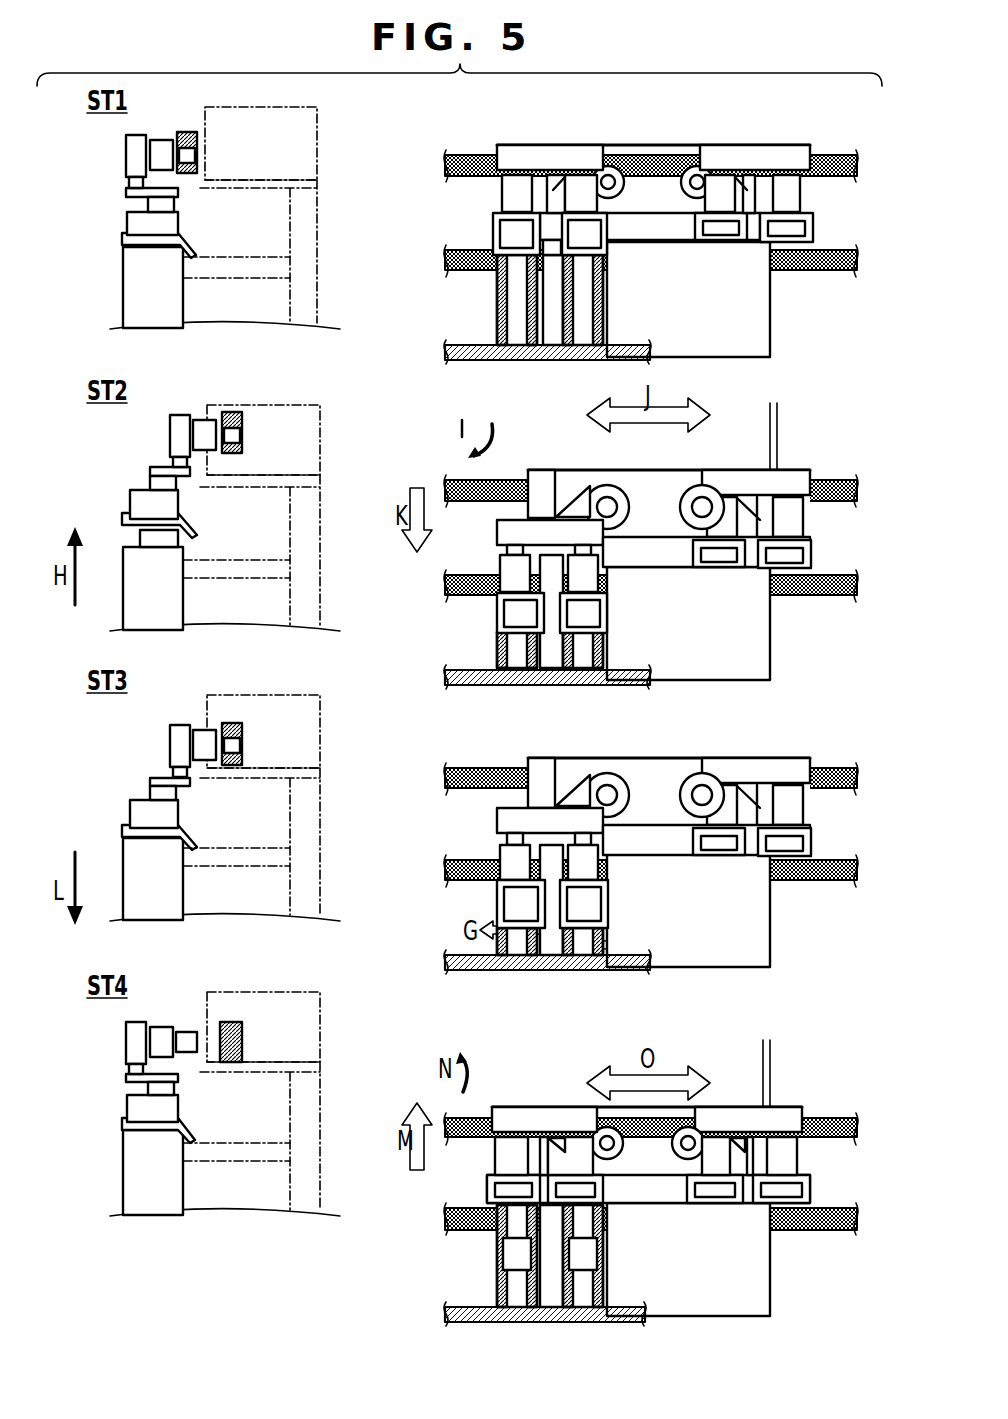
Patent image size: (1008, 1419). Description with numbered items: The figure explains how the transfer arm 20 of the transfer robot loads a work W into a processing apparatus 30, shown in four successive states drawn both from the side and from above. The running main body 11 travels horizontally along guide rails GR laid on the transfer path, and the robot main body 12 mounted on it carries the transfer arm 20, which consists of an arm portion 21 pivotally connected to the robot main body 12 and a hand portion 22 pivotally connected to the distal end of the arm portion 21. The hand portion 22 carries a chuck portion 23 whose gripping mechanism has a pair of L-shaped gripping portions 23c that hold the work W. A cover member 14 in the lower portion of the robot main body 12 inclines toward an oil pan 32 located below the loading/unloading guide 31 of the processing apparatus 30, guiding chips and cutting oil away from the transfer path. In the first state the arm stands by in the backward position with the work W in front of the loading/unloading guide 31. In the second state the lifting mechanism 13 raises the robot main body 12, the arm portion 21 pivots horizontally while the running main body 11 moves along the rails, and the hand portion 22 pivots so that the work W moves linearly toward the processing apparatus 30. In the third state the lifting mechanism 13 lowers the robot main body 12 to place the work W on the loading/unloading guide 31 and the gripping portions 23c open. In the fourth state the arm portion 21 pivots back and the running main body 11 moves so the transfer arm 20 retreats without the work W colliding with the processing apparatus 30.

The running main body 11 is at (125, 280).
The robot main body 12 is at (132, 222).
The lifting mechanism 13 is at (147, 540).
The cover member 14 is at (192, 252).
The transfer arm 20 is at (115, 162).
The arm portion 21 is at (126, 192).
The hand portion 22 is at (126, 150).
The chuck portion 23 is at (158, 128).
The gripping portion 23c is at (198, 158).
The processing apparatus 30 is at (318, 170).
The loading/unloading guide 31 is at (278, 177).
The oil pan 32 is at (235, 257).
The work W is at (200, 132).
The guide rails GR is at (858, 168).